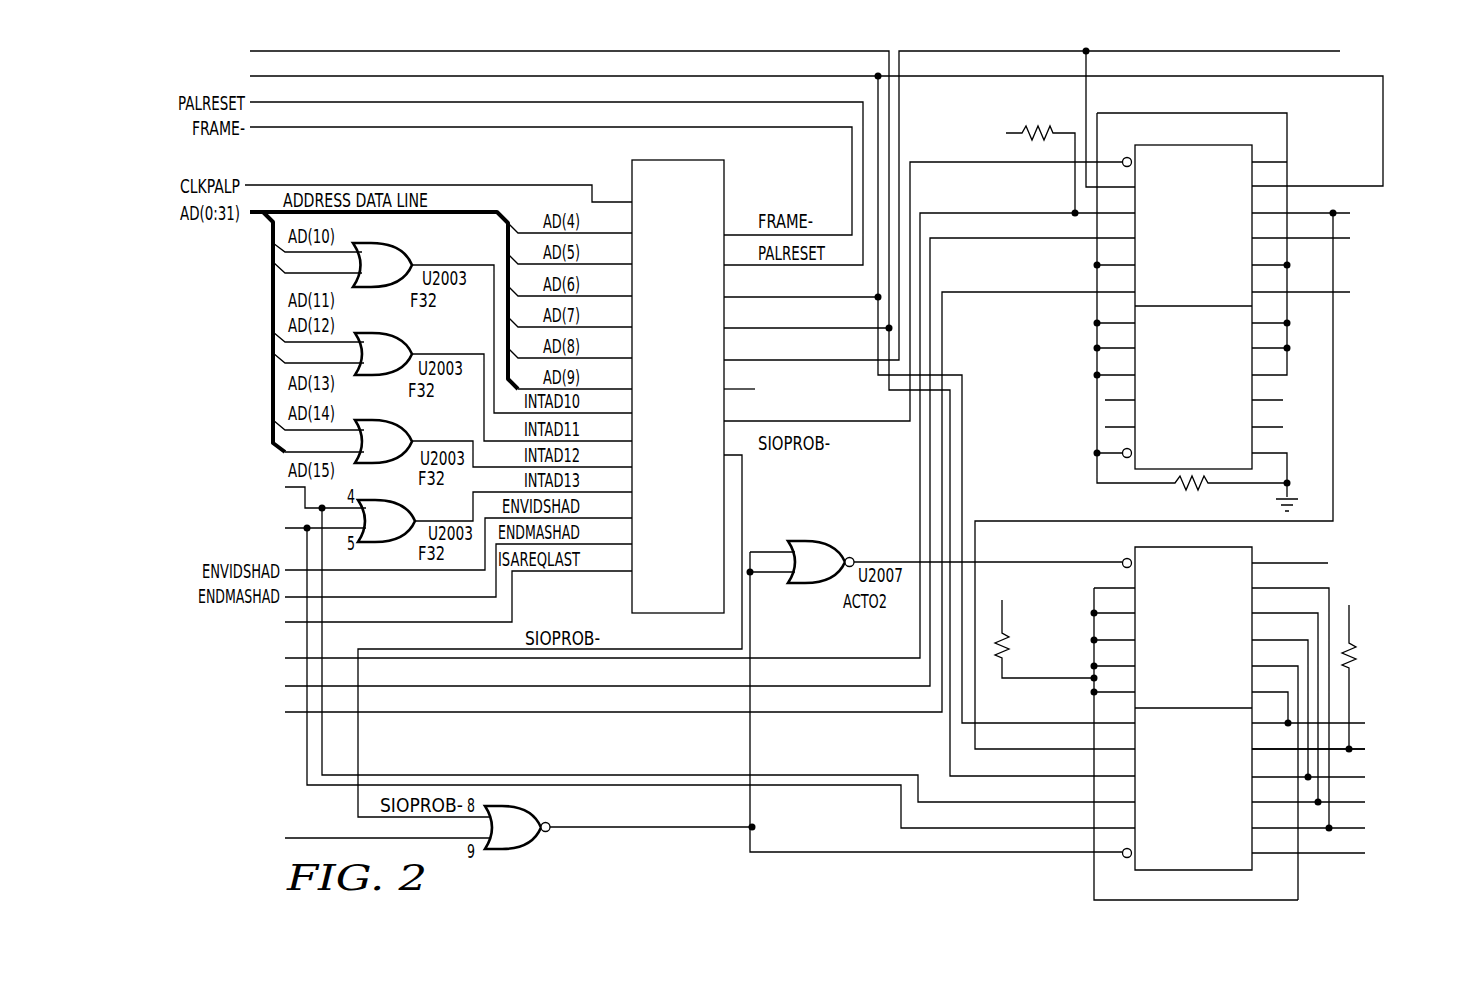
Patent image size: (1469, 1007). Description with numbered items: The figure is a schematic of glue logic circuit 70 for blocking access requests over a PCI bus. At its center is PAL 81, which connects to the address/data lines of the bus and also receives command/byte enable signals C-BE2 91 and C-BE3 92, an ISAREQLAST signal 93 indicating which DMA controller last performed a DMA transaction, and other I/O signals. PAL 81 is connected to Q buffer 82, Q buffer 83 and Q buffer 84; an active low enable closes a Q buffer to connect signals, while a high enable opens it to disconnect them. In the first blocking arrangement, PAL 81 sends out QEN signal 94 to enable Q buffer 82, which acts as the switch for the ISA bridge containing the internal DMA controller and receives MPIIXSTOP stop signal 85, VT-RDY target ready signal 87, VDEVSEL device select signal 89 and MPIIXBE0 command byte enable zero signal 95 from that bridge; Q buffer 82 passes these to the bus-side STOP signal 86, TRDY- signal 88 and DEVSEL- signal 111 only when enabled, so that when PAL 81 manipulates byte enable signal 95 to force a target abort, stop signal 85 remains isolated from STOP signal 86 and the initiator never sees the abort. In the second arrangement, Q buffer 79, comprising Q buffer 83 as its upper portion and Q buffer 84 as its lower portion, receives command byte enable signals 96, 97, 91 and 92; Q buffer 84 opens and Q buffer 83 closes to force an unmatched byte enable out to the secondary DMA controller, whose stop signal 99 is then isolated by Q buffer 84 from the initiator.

The glue logic circuit 70 is at (232, 790).
The Q buffer 79 is at (1388, 598).
The PAL 81 is at (727, 190).
The Q buffer 82 is at (1207, 256).
The Q buffer 83 is at (1209, 655).
The Q buffer 84 is at (1209, 817).
The MPIIXSTOP stop signal 85 is at (190, 657).
The STOP signal 86 is at (1200, 475).
The VT-RDY target ready signal 87 is at (220, 683).
The TRDY- signal line 88 is at (1339, 237).
The VDEVSEL device select signal 89 is at (203, 716).
The C-BE2 command/byte enable signal 91 is at (218, 486).
The C-BE3 command/byte enable signal 92 is at (218, 528).
The ISAREQLAST signal 93 is at (184, 623).
The QEN signal 94 is at (923, 291).
The MPIIXBE0 command byte enable zero signal 95 is at (1408, 67).
The command byte enable signal 96 is at (182, 74).
The command byte enable signal 97 is at (182, 49).
The secondary DMA controller's stop signal 99 is at (1359, 750).
The DEVSEL- signal line 111 is at (1352, 290).